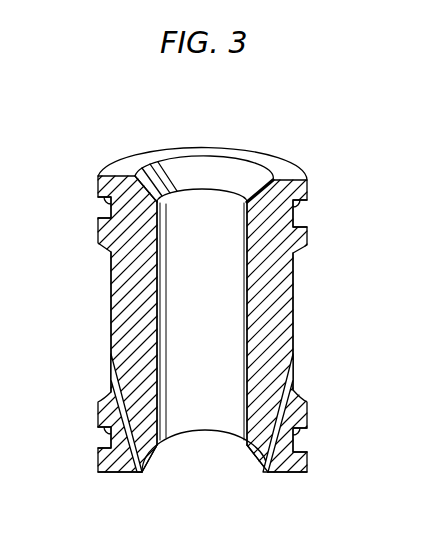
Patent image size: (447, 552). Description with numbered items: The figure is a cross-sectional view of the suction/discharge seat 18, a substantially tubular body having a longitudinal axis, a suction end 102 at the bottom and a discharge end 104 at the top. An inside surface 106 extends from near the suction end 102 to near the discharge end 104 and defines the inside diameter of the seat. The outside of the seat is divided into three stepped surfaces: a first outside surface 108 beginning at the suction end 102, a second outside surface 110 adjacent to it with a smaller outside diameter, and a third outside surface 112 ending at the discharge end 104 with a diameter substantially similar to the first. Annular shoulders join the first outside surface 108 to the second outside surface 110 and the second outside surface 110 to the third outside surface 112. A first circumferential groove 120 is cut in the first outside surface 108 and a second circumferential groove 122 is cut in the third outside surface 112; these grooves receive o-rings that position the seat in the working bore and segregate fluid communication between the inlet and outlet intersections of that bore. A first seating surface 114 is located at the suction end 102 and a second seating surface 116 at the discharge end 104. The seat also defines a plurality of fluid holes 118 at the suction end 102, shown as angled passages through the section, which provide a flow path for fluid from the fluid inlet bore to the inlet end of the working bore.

The suction/discharge seat 18 is at (355, 274).
The suction end 102 is at (291, 474).
The discharge end 104 is at (270, 162).
The inside surface 106 is at (245, 297).
The first outside surface 108 is at (307, 462).
The second outside surface 110 is at (293, 328).
The third outside surface 112 is at (300, 232).
The first seating surface 114 is at (142, 472).
The second seating surface 116 is at (152, 172).
The fluid holes 118 is at (112, 373).
The first circumferential groove 120 is at (108, 439).
The second circumferential groove 122 is at (106, 208).